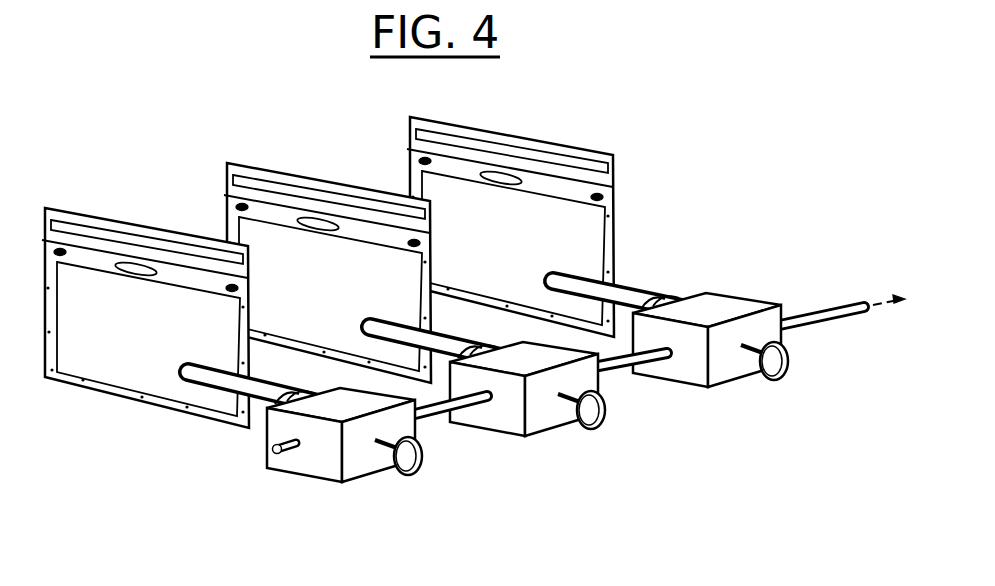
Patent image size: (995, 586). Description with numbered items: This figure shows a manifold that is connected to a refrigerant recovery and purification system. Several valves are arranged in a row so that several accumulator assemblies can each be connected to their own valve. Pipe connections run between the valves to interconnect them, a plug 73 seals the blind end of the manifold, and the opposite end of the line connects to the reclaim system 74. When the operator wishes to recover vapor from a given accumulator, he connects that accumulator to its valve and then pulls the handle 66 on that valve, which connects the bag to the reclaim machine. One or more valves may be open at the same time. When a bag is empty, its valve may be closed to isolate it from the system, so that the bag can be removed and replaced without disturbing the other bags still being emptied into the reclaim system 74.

The handle 66 is at (431, 467).
The plug 73 is at (266, 447).
The reclaim system 74 is at (864, 276).